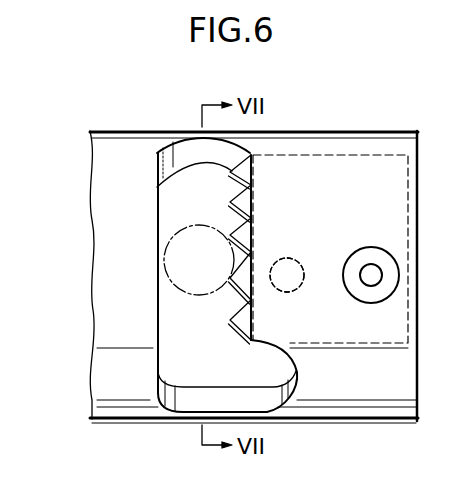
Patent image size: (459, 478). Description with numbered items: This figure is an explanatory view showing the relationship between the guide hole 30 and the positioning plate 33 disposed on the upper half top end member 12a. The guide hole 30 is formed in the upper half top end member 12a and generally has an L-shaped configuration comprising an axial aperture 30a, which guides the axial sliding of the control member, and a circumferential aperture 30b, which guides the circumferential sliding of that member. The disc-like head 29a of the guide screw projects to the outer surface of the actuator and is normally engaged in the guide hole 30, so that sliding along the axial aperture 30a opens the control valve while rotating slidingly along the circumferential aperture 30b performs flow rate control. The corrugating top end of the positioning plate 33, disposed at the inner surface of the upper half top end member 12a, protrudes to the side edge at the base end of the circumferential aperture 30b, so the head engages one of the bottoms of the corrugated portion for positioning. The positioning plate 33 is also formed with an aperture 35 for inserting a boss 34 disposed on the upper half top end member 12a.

The upper half top end member 12a is at (103, 178).
The disc-like head of the guide screw 29a is at (173, 260).
The guide hole 30 is at (182, 316).
The axial aperture 30a is at (268, 363).
The circumferential aperture 30b is at (167, 196).
The positioning plate 33 is at (336, 155).
The boss 34 is at (297, 287).
The aperture 35 is at (281, 262).